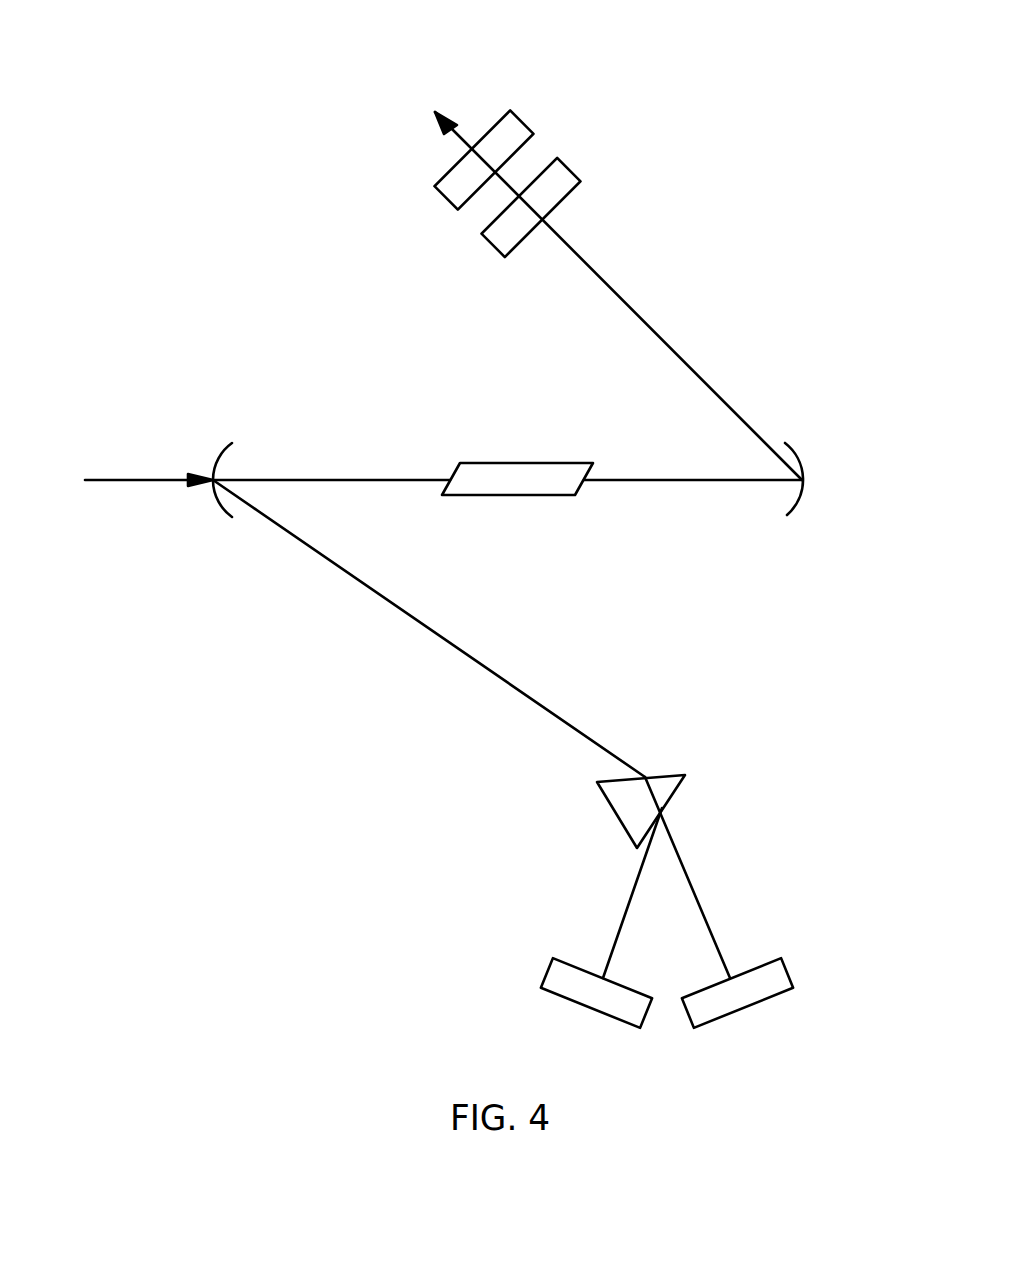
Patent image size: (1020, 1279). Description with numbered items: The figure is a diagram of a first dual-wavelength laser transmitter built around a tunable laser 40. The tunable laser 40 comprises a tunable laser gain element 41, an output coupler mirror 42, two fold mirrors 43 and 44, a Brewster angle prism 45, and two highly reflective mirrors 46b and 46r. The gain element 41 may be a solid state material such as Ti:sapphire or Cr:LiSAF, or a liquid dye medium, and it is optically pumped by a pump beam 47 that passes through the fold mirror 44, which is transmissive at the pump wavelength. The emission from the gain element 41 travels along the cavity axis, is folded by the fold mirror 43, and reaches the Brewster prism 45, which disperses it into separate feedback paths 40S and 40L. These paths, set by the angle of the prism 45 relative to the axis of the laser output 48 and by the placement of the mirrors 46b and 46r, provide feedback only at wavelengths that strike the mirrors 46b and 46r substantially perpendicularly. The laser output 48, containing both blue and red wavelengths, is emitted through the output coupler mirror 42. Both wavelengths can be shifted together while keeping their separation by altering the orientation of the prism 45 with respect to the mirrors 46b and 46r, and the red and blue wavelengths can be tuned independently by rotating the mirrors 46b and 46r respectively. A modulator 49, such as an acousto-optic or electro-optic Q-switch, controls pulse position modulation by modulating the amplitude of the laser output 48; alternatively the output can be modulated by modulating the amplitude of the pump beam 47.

The tunable laser 40 is at (820, 590).
The feedback path 40S is at (620, 918).
The feedback path 40L is at (712, 918).
The tunable laser gain element 41 is at (518, 463).
The output coupler mirror 42 is at (523, 120).
The fold mirror 43 is at (852, 418).
The fold mirror 44 is at (220, 457).
The Brewster angle prism 45 is at (613, 815).
The highly reflective mirror 46b is at (548, 973).
The highly reflective mirror 46r is at (843, 940).
The pump beam 47 is at (133, 509).
The laser output 48 is at (443, 123).
The modulator 49 is at (573, 170).